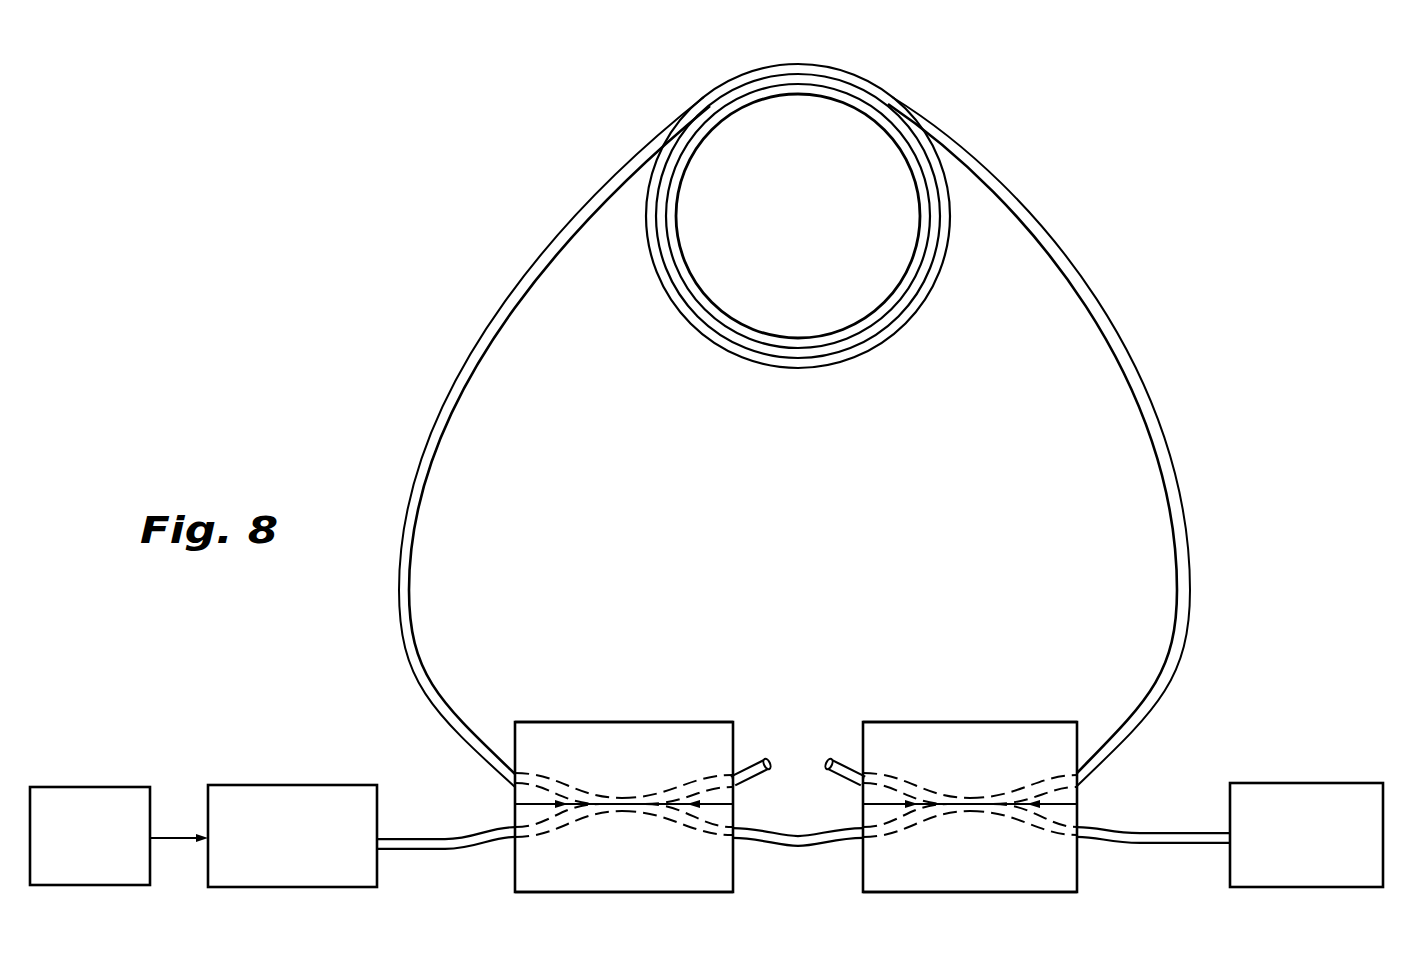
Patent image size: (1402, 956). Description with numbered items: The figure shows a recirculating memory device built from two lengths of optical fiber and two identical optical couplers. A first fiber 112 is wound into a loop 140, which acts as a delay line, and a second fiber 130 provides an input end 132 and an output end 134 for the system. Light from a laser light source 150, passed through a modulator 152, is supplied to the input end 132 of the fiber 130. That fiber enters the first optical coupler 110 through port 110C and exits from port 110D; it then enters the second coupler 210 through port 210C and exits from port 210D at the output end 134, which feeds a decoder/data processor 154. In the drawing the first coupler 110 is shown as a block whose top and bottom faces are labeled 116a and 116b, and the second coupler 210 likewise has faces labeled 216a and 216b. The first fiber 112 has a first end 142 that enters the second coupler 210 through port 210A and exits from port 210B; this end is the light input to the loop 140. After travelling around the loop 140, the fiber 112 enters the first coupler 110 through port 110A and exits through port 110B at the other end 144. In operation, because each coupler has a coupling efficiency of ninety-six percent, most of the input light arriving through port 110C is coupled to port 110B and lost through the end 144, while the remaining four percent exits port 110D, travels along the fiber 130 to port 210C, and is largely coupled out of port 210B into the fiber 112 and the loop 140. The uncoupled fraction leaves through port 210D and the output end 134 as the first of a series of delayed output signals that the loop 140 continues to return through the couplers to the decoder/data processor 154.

The first optical coupler 110 is at (624, 800).
The port of first coupler 110A is at (497, 770).
The port of first coupler 110B is at (717, 745).
The port of first coupler 110C is at (492, 850).
The port of first coupler 110D is at (748, 846).
The first fiber 112 is at (1151, 418).
The upper surface of coupler 110 116a is at (573, 722).
The lower surface of coupler 110 116b is at (603, 893).
The second fiber 130 is at (805, 848).
The input end 132 is at (428, 838).
The output end 134 is at (1158, 843).
The loop 140 is at (950, 111).
The first end of fiber 112 142 is at (837, 771).
The other end of fiber 112 144 is at (762, 761).
The laser light source 150 is at (96, 787).
The modulator 152 is at (289, 785).
The decoder/data processor 154 is at (1297, 783).
The second optical coupler 210 is at (996, 803).
The port of second coupler 210A is at (881, 752).
The port of second coupler 210B is at (1093, 770).
The port of second coupler 210C is at (845, 846).
The port of second coupler 210D is at (1093, 845).
The upper surface of coupler 210 216a is at (953, 722).
The lower surface of coupler 210 216b is at (972, 892).